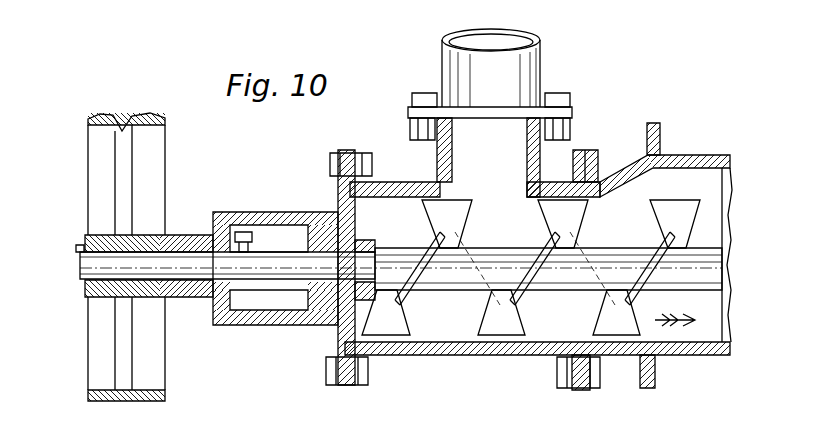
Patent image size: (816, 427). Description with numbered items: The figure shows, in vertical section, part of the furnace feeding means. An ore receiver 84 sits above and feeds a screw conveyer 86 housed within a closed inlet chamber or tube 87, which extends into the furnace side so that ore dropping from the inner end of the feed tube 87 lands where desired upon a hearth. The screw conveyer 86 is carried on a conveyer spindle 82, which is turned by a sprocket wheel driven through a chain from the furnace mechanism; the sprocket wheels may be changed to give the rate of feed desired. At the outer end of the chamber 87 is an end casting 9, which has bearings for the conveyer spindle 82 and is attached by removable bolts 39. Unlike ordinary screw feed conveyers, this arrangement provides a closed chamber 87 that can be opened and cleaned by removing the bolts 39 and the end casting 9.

The end casting 9 is at (263, 320).
The removable bolts 39 is at (330, 176).
The conveyer spindle 82 is at (80, 268).
The ore receiver 84 is at (541, 57).
The screw conveyer 86 is at (545, 222).
The inlet chamber or tube 87 is at (720, 170).